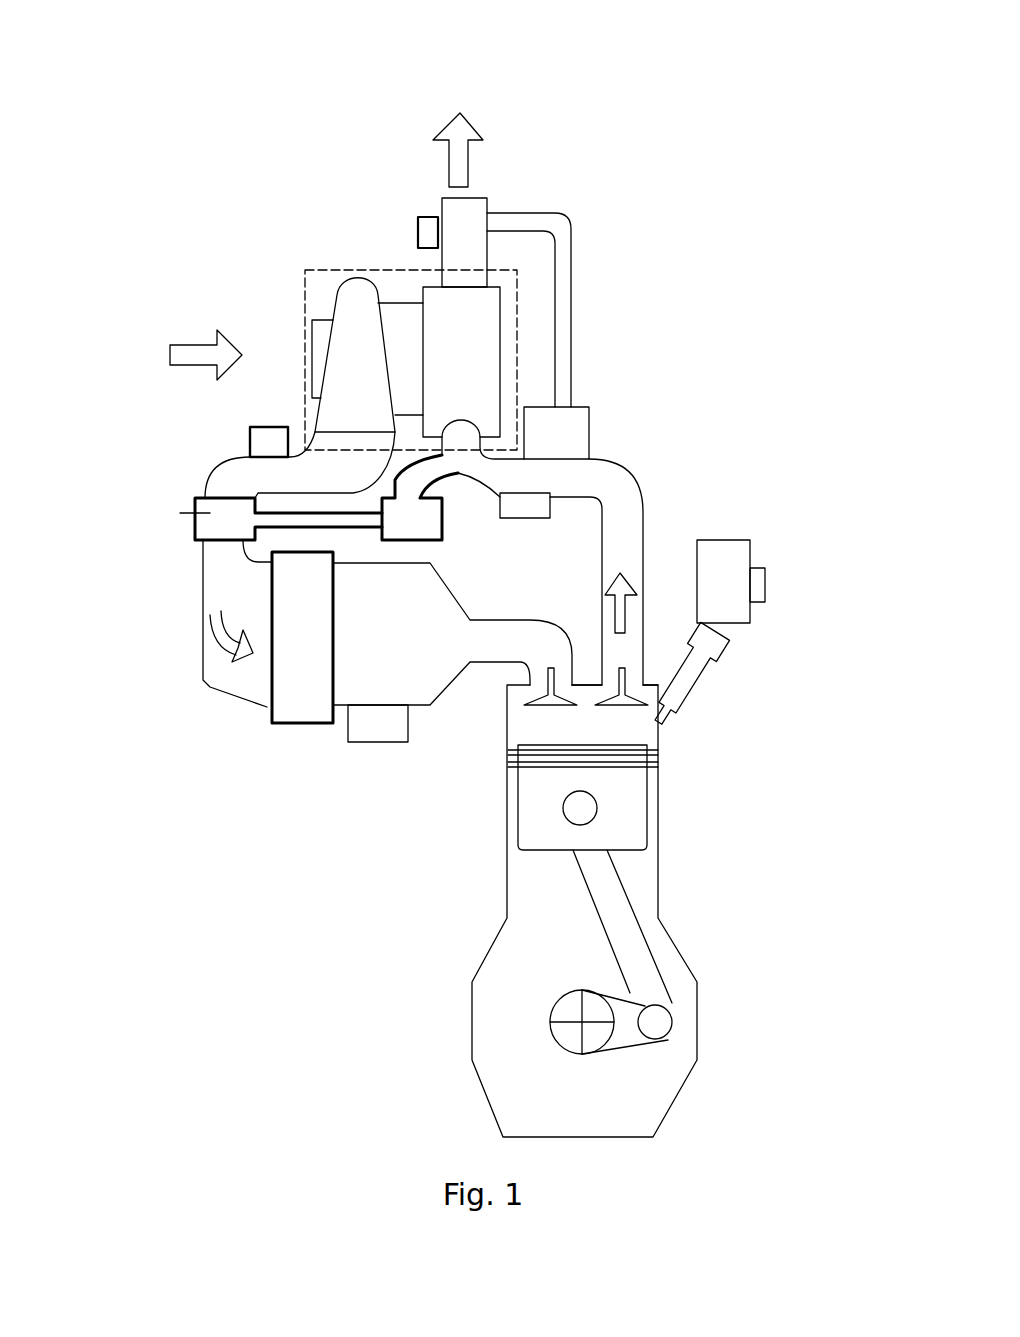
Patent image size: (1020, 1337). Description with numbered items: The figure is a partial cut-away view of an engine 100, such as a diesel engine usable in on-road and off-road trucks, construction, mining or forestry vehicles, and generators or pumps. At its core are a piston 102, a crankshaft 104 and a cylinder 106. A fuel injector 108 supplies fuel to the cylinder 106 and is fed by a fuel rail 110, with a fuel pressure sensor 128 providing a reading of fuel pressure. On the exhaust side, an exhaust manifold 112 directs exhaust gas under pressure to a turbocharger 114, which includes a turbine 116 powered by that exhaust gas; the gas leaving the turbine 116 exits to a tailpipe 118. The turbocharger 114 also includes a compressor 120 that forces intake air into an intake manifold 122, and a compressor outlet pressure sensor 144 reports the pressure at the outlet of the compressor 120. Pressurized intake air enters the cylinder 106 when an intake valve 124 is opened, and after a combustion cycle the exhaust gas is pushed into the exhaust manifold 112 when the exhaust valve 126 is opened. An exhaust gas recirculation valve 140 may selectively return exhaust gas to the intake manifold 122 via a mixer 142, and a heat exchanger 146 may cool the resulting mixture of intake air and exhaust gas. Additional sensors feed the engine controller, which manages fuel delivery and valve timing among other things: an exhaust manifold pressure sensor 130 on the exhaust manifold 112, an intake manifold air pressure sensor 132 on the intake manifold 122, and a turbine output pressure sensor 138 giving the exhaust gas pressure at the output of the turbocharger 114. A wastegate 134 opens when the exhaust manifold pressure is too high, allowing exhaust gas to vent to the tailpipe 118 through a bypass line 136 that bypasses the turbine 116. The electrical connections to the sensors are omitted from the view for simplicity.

The engine 100 is at (509, 37).
The piston 102 is at (518, 802).
The crankshaft 104 is at (590, 1040).
The cylinder 106 is at (658, 847).
The fuel injector 108 is at (690, 677).
The fuel rail 110 is at (718, 540).
The exhaust manifold 112 is at (633, 490).
The turbocharger 114 is at (305, 292).
The turbine 116 is at (423, 302).
The tailpipe 118 is at (485, 206).
The compressor 120 is at (335, 293).
The intake manifold 122 is at (203, 655).
The intake valve 124 is at (530, 703).
The exhaust valve 126 is at (603, 705).
The fuel pressure sensor 128 is at (765, 583).
The exhaust manifold pressure sensor 130 is at (513, 518).
The intake manifold air pressure (IMAP) sensor 132 is at (372, 742).
The wastegate 134 is at (588, 437).
The bypass line 136 is at (570, 317).
The turbine output pressure sensor 138 is at (423, 216).
The exhaust gas recirculation (EGR) valve 140 is at (443, 512).
The mixer 142 is at (200, 515).
The compressor outlet pressure sensor 144 is at (250, 440).
The heat exchanger 146 is at (282, 723).